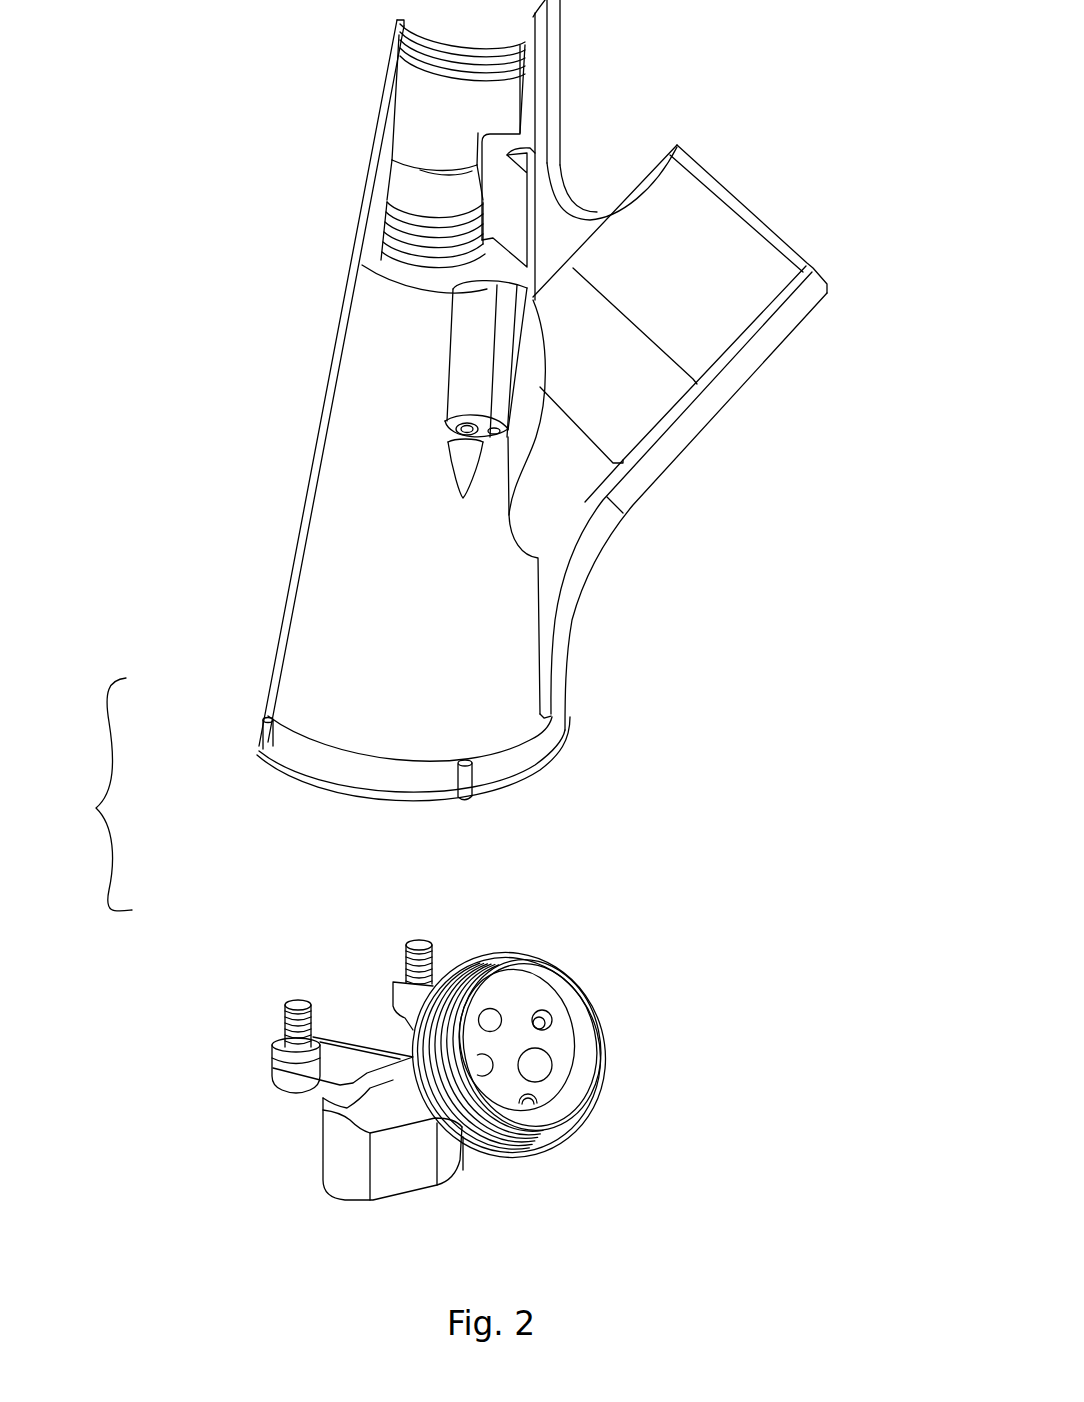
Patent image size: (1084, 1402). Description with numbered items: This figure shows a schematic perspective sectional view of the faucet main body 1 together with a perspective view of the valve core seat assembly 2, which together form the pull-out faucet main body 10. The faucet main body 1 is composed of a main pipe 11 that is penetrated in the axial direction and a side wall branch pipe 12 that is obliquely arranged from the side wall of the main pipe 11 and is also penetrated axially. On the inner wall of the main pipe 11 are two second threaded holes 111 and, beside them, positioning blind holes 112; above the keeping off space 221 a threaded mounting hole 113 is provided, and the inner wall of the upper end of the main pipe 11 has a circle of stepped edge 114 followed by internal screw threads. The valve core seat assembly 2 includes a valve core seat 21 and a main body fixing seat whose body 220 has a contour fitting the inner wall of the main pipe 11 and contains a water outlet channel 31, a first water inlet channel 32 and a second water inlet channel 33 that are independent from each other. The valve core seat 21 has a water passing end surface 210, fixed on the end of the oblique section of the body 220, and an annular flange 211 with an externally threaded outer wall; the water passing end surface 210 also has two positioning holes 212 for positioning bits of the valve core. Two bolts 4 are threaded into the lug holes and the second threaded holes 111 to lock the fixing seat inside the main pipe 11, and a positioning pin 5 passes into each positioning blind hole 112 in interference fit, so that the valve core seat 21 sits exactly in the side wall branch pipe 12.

The pull-out faucet main body 10 is at (96, 794).
The faucet main body 1 is at (247, 637).
The main pipe 11 is at (337, 447).
The second threaded hole 111 is at (467, 432).
The positioning blind hole 112 is at (495, 432).
The threaded mounting hole 113 is at (400, 250).
The stepped edge 114 is at (417, 40).
The side wall branch pipe 12 is at (633, 222).
The valve core seat assembly 2 is at (280, 973).
The valve core seat 21 is at (860, 1222).
The water passing end surface 210 is at (525, 1000).
The annular flange 211 is at (577, 986).
The positioning hole 212 is at (547, 1022).
The water outlet channel 31 is at (540, 1068).
The first water inlet channel 32 is at (490, 1022).
The second water inlet channel 33 is at (482, 1065).
The bolt 4 is at (300, 1002).
The positioning pin 5 is at (308, 1047).
The body 220 is at (353, 1163).
The keeping off space 221 is at (378, 1033).